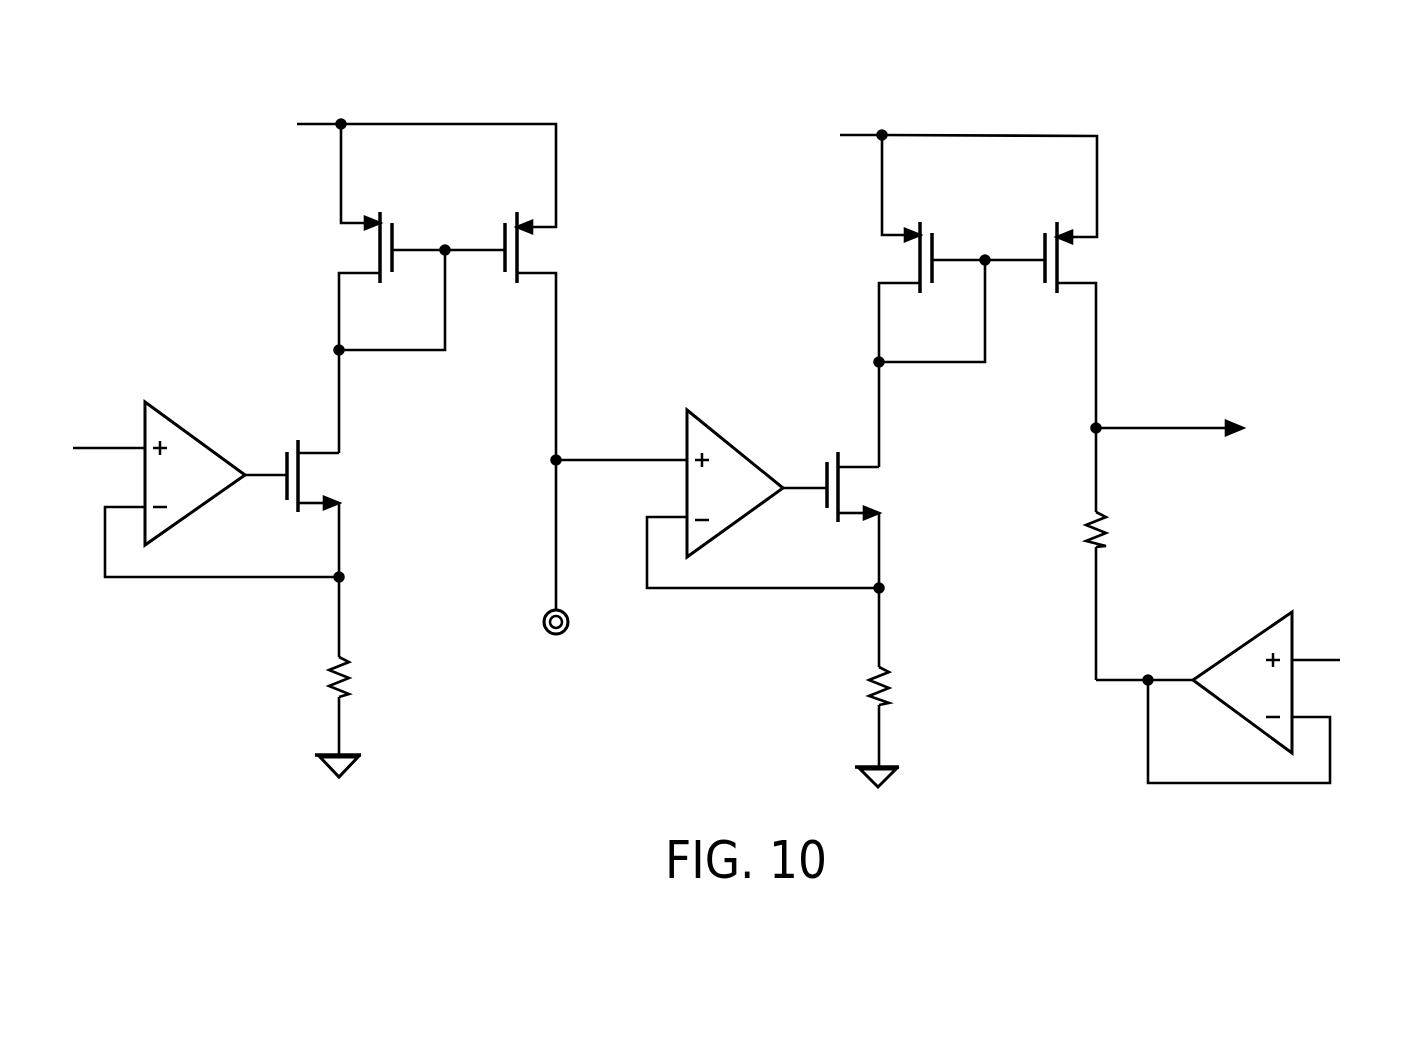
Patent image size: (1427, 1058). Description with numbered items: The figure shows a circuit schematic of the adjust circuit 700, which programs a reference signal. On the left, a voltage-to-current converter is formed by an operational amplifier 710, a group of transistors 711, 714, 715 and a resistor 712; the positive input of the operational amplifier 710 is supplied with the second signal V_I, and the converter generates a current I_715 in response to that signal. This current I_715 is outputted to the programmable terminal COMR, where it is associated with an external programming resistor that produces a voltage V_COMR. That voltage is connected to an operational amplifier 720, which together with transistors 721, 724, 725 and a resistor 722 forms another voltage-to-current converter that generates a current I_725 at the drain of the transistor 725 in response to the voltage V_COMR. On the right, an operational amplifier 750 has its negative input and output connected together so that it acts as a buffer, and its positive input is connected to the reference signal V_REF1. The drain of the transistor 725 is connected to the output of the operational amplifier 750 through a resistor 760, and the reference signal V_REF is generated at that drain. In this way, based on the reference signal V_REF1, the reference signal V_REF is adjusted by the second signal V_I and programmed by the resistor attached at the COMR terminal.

The adjust circuit 700 is at (1325, 111).
The operational amplifier 710 is at (197, 432).
The transistor 711 is at (340, 480).
The resistor 712 is at (360, 680).
The transistor 714 is at (338, 252).
The transistor 715 is at (563, 252).
The operational amplifier 720 is at (738, 445).
The transistor 721 is at (883, 492).
The resistor 722 is at (905, 690).
The transistor 724 is at (878, 262).
The transistor 725 is at (1103, 262).
The operational amplifier 750 is at (1243, 640).
The resistor 760 is at (1112, 533).